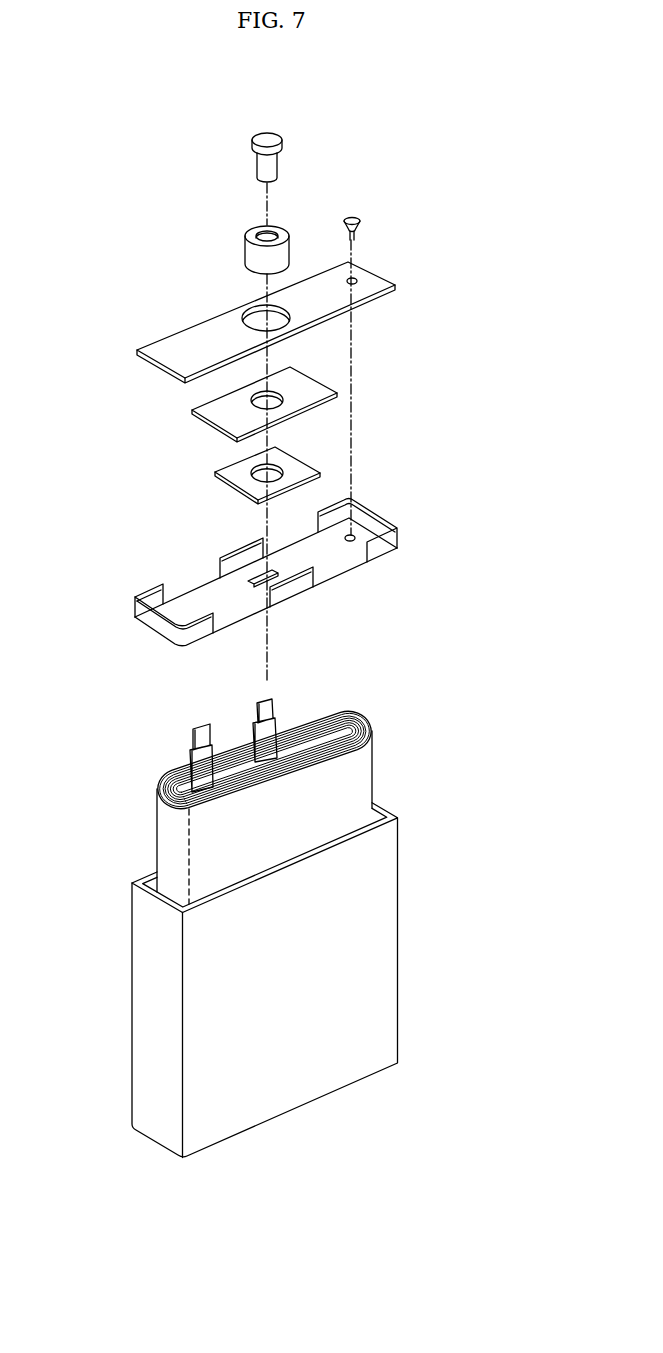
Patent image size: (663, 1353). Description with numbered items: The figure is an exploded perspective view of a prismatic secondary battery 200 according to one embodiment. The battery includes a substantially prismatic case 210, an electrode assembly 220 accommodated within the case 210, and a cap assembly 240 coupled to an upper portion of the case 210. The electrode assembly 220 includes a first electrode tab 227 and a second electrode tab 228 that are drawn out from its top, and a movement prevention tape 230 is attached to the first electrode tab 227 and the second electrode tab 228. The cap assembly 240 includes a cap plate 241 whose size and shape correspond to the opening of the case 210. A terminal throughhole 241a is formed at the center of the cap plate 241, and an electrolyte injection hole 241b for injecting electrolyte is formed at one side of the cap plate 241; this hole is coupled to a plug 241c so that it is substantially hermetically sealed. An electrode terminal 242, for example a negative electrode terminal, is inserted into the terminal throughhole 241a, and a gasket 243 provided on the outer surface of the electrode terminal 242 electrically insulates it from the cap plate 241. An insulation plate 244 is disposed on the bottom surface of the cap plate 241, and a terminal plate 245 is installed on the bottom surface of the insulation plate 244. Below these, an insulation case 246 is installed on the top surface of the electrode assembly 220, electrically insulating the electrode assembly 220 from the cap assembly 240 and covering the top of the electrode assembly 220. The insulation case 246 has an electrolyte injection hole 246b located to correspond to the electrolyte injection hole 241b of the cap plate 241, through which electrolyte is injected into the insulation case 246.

The prismatic secondary battery 200 is at (422, 136).
The case 210 is at (390, 906).
The electrode assembly 220 is at (153, 778).
The first electrode tab 227 is at (200, 730).
The second electrode tab 228 is at (272, 708).
The movement prevention tape 230 is at (258, 729).
The cap assembly 240 is at (403, 276).
The cap plate 241 is at (157, 346).
The terminal throughhole 241a is at (258, 313).
The electrolyte injection hole 241b is at (353, 280).
The plug 241c is at (352, 216).
The electrode terminal 242 is at (258, 136).
The gasket 243 is at (248, 237).
The insulation plate 244 is at (220, 419).
The terminal plate 245 is at (240, 476).
The insulation case 246 is at (140, 590).
The electrolyte injection hole 246b is at (352, 535).